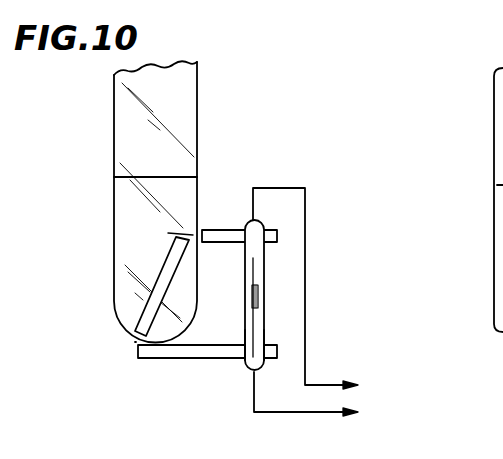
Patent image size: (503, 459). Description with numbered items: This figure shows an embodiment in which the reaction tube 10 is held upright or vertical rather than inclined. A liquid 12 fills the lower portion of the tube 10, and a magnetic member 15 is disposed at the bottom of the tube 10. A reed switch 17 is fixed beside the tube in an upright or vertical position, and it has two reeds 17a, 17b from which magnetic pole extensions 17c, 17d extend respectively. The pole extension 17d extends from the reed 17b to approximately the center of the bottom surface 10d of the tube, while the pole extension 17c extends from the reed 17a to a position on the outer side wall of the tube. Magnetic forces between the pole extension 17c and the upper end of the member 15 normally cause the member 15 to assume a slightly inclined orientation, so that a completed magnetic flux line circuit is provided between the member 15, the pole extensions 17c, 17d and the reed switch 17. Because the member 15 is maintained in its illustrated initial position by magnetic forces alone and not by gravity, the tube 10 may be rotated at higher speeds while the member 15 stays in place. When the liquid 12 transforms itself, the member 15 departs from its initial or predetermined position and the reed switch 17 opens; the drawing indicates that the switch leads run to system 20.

The tube 10 is at (197, 103).
The bottom surface 10d is at (135, 342).
The liquid 12 is at (113, 198).
The member 15 is at (176, 237).
The reed switch 17 is at (263, 302).
The reed 17a is at (255, 258).
The reed 17b is at (263, 337).
The magnetic pole extension 17c is at (225, 230).
The magnetic pole extension 17d is at (170, 350).
The system 20 is at (374, 302).